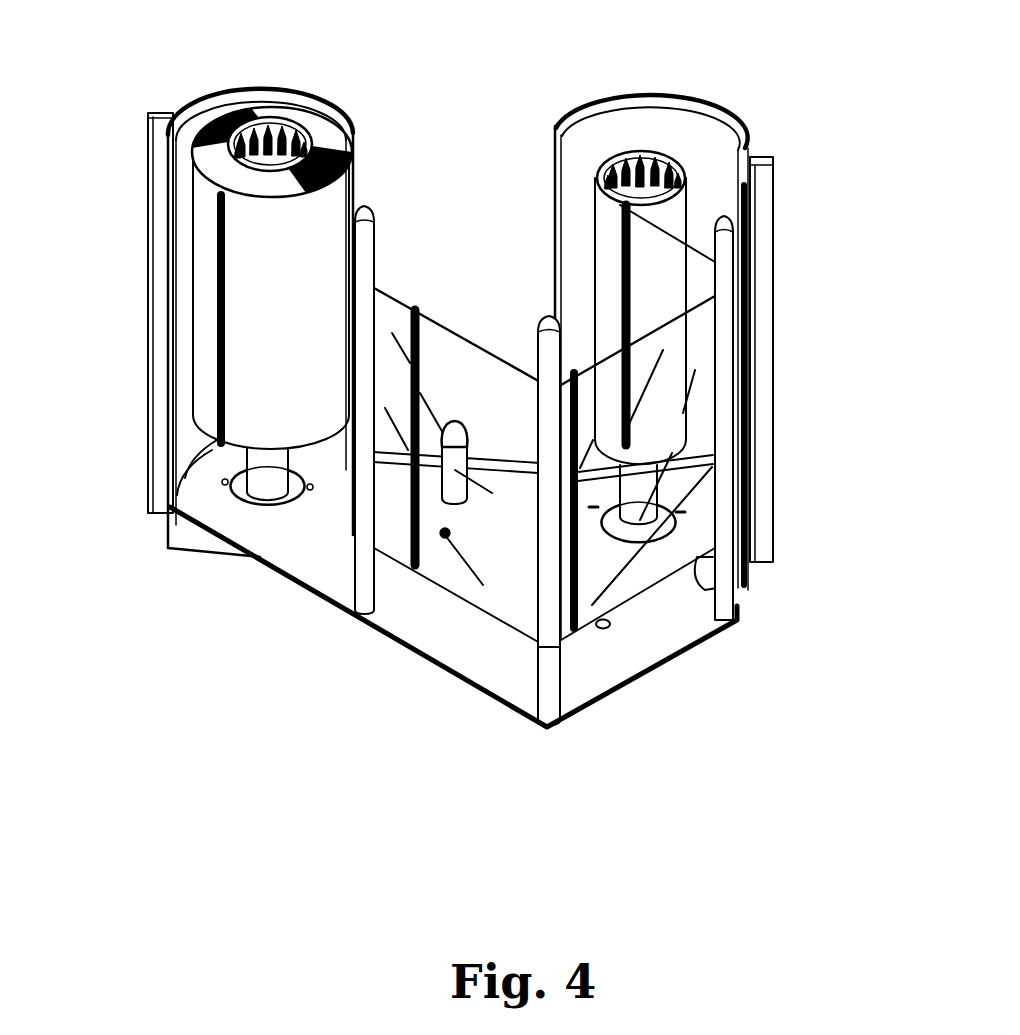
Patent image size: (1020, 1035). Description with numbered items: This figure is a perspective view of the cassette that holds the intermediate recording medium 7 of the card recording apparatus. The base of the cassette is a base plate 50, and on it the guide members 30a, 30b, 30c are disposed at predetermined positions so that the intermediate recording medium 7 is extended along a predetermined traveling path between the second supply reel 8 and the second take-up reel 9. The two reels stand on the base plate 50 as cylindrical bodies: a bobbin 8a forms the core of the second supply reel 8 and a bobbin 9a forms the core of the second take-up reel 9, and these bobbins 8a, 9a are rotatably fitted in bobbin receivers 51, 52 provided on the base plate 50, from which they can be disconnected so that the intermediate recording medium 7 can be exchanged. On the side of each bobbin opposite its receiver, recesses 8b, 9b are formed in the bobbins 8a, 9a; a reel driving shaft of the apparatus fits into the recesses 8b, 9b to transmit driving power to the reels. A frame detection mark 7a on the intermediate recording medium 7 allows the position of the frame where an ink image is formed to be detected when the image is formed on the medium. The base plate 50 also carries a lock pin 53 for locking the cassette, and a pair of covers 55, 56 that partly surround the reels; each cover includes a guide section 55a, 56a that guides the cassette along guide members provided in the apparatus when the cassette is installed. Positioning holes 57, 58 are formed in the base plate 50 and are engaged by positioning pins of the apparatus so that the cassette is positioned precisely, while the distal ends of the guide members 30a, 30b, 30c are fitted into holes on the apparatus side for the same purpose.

The intermediate recording medium 7 is at (432, 318).
The frame detection mark 7a is at (422, 357).
The second supply reel 8 is at (327, 203).
The bobbin 8a is at (302, 130).
The recess 8b is at (278, 128).
The second take-up reel 9 is at (677, 210).
The bobbin 9a is at (650, 153).
The recess 9b is at (613, 157).
The guide member 30a is at (385, 241).
The guide member 30b is at (535, 352).
The guide member 30c is at (723, 262).
The base plate 50 is at (645, 658).
The bobbin receiver 51 is at (265, 463).
The bobbin receiver 52 is at (690, 470).
The lock pin 53 is at (470, 440).
The cover 55 is at (697, 110).
The guide section 55a is at (770, 198).
The cover 56 is at (221, 95).
The guide section 56a is at (148, 410).
The positioning hole 57 is at (445, 535).
The positioning hole 58 is at (604, 630).